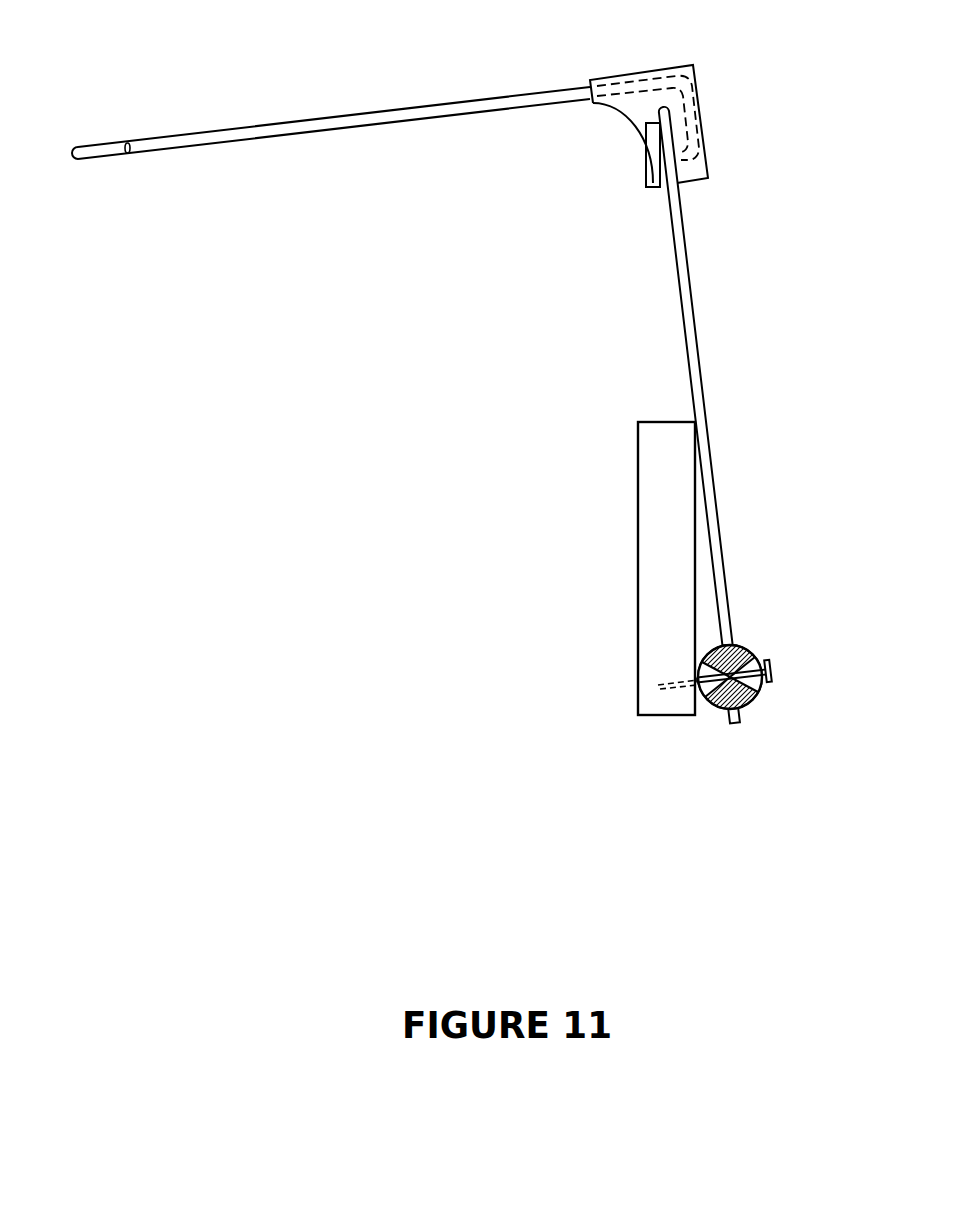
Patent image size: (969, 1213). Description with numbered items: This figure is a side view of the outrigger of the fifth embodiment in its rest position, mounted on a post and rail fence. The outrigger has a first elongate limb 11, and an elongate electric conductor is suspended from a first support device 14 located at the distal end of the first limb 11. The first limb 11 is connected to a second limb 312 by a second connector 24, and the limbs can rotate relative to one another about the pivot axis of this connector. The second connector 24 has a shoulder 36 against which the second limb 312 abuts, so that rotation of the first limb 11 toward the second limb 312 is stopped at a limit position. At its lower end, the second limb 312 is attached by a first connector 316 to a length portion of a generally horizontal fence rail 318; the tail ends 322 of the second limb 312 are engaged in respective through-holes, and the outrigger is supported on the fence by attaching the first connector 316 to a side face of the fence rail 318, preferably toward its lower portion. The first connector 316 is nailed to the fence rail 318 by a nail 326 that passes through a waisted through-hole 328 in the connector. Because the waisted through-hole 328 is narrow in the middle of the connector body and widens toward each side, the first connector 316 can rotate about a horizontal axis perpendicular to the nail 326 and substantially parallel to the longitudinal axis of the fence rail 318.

The first elongate limb 11 is at (402, 106).
The first support device 14 is at (102, 145).
The second connector 24 is at (640, 109).
The shoulder 36 is at (653, 183).
The second limb 312 is at (693, 342).
The fence rail 318 is at (652, 463).
The tail ends 322 is at (733, 628).
The nail 326 is at (772, 668).
The waisted through-hole 328 is at (760, 685).
The first connector 316 is at (750, 703).